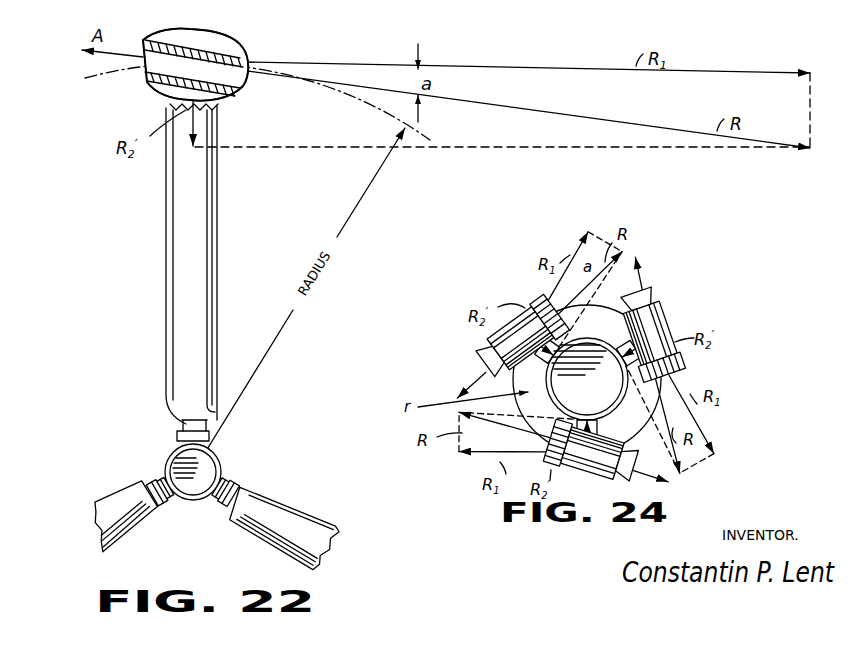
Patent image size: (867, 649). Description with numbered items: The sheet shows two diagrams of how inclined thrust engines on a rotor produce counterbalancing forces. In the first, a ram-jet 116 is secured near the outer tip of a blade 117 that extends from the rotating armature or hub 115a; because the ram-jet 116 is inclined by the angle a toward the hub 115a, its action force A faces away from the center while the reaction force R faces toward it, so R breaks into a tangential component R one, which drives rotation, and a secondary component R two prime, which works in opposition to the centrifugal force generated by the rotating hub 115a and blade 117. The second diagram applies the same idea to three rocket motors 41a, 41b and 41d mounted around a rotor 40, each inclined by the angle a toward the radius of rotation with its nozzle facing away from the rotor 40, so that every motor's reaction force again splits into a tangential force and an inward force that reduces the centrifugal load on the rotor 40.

In FIG. 22, the ram-jet 116 is at (250, 27).
In FIG. 22, the blade 117 is at (217, 243).
In FIG. 22, the hub 115a is at (207, 455).
In FIG. 24, the rotor 40 is at (587, 379).
In FIG. 24, the rocket motor 41a is at (527, 293).
In FIG. 24, the rocket motor 41b is at (640, 492).
In FIG. 24, the cylinder unit 41d is at (676, 311).